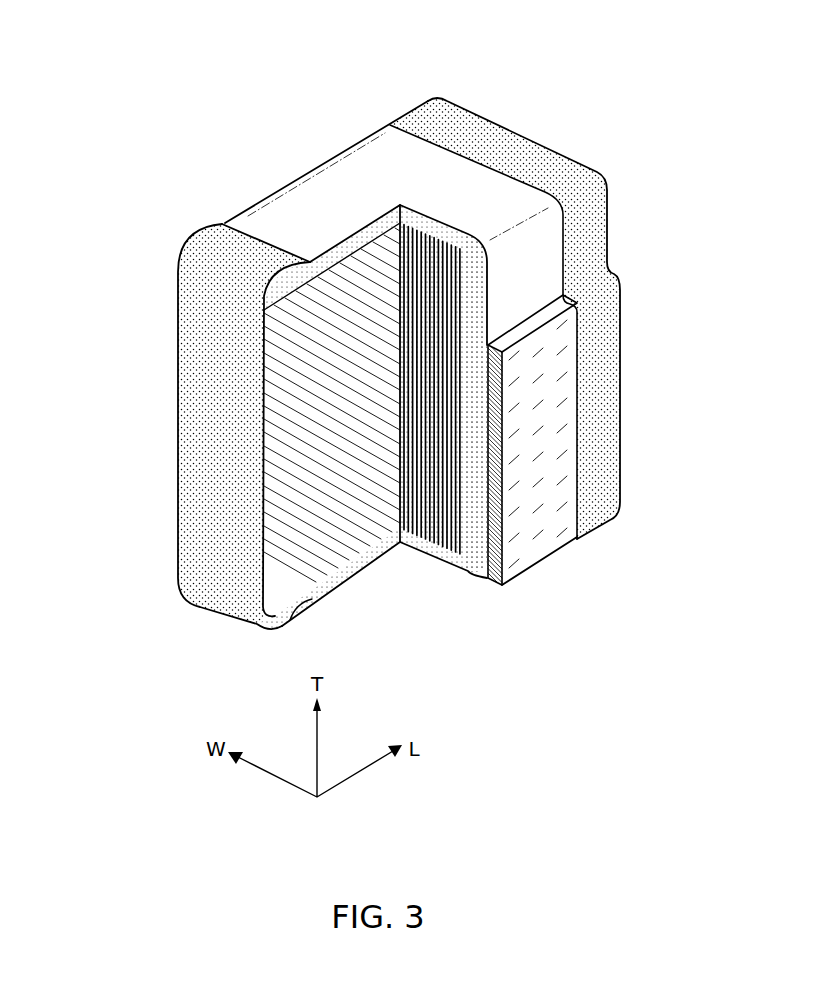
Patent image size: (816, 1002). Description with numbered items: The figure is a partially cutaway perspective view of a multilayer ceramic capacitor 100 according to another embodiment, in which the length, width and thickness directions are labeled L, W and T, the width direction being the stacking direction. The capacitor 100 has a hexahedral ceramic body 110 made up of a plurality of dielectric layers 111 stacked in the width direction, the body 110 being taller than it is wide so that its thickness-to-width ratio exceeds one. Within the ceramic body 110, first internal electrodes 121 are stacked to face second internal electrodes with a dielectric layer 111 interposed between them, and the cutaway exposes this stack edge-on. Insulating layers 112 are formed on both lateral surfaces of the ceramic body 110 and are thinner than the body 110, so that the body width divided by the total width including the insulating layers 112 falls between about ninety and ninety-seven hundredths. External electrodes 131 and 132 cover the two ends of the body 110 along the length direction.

The multilayer ceramic capacitor 100 is at (368, 33).
The ceramic body 110 is at (315, 153).
The dielectric layer 111 is at (478, 495).
The insulating layer 112 is at (545, 428).
The first internal electrode 121 is at (283, 452).
The first external electrode 131 is at (222, 248).
The second external electrode 132 is at (529, 128).